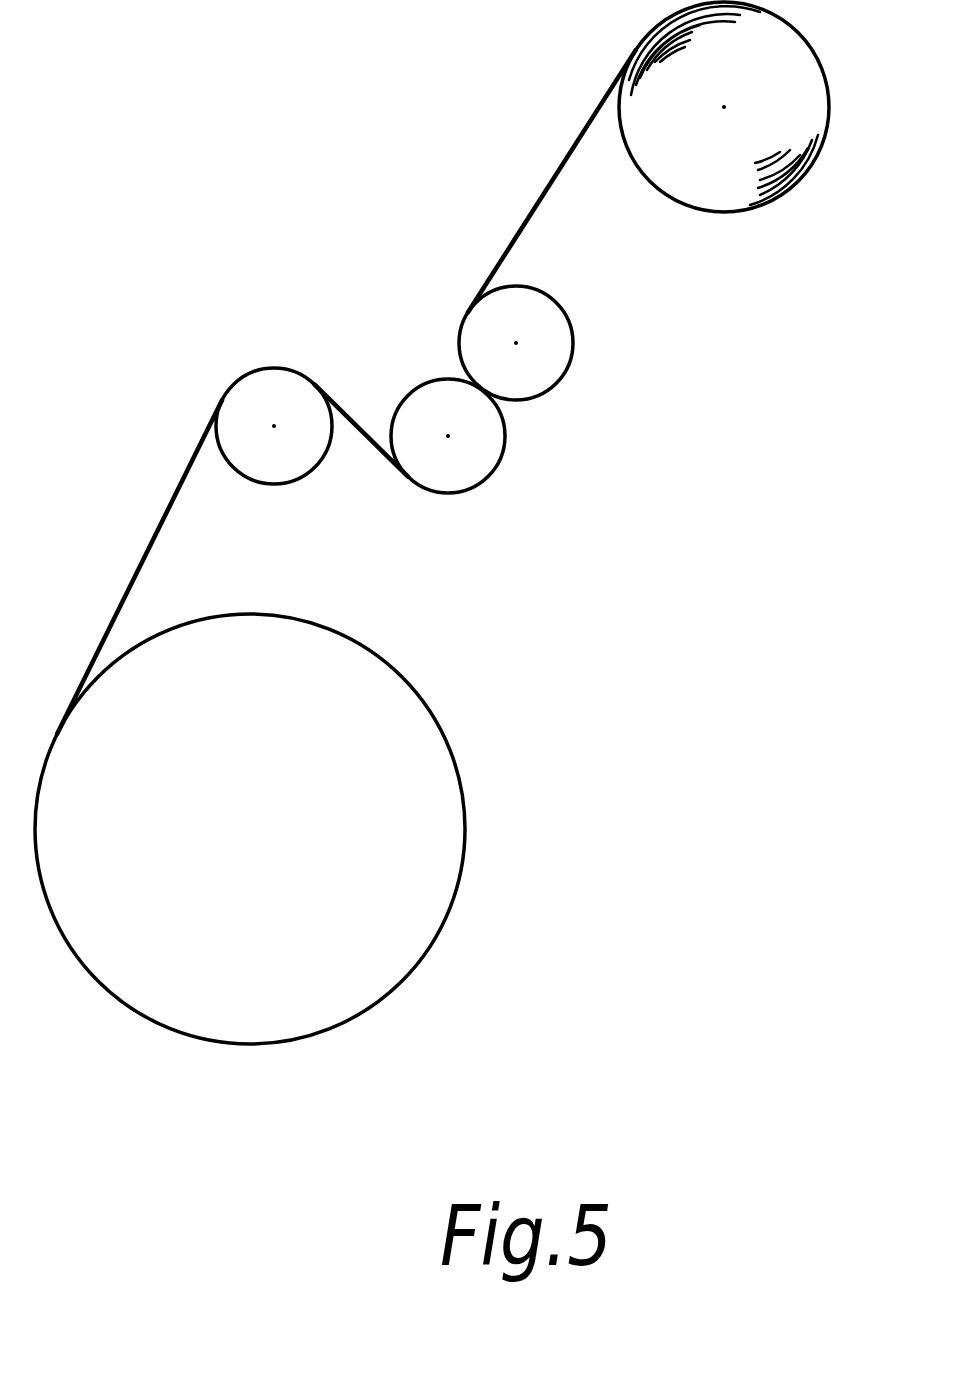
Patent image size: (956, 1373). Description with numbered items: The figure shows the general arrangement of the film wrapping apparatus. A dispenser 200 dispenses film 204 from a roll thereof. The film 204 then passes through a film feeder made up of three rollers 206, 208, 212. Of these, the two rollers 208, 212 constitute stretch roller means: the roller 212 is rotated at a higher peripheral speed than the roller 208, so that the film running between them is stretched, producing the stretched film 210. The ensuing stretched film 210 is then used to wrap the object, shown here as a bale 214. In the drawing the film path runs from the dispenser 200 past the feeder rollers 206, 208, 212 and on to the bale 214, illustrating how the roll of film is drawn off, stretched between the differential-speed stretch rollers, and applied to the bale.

The dispenser 200 is at (745, 207).
The film 204 is at (582, 133).
The roller 206 is at (562, 383).
The stretch roller 208 is at (485, 473).
The stretched film 210 is at (357, 418).
The stretch roller 212 is at (230, 410).
The bale 214 is at (427, 890).